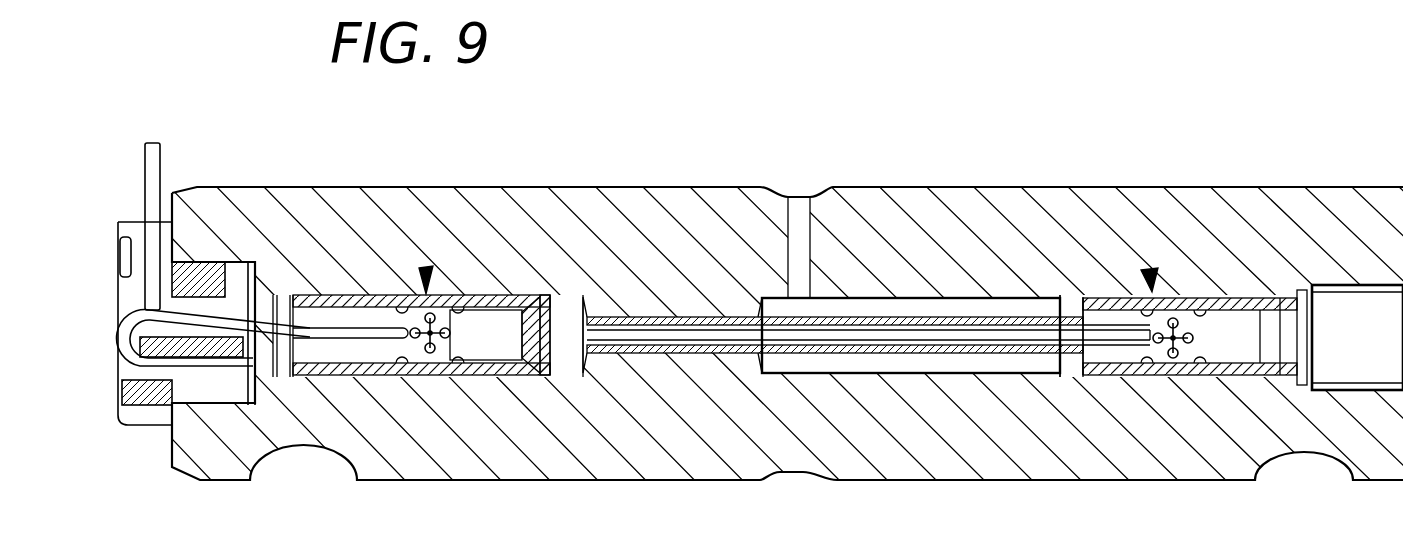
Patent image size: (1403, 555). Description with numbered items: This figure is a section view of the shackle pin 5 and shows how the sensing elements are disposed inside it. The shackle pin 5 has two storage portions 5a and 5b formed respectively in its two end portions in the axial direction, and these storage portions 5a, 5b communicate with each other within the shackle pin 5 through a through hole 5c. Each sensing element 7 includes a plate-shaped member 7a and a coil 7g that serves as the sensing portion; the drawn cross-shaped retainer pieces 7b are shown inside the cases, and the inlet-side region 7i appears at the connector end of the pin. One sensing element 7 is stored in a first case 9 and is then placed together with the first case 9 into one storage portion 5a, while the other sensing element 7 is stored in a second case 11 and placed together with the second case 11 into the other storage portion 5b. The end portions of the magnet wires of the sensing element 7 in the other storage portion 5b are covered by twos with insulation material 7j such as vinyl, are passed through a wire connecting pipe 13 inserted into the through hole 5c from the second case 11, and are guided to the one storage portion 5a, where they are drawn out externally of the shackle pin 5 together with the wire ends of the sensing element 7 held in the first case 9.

The shackle pin 5 is at (665, 187).
The storage portion 5a is at (568, 376).
The storage portion 5b is at (923, 373).
The through hole 5c is at (688, 353).
The sensing element 7 is at (320, 316).
The plate-shaped member 7a is at (515, 362).
The retainer cross 7b is at (434, 354).
The coil 7g is at (480, 333).
The inlet end 7i is at (313, 322).
The insulation material 7j is at (1100, 335).
The first case 9 is at (427, 270).
The second case 11 is at (1150, 272).
The wire connecting pipe 13 is at (712, 314).